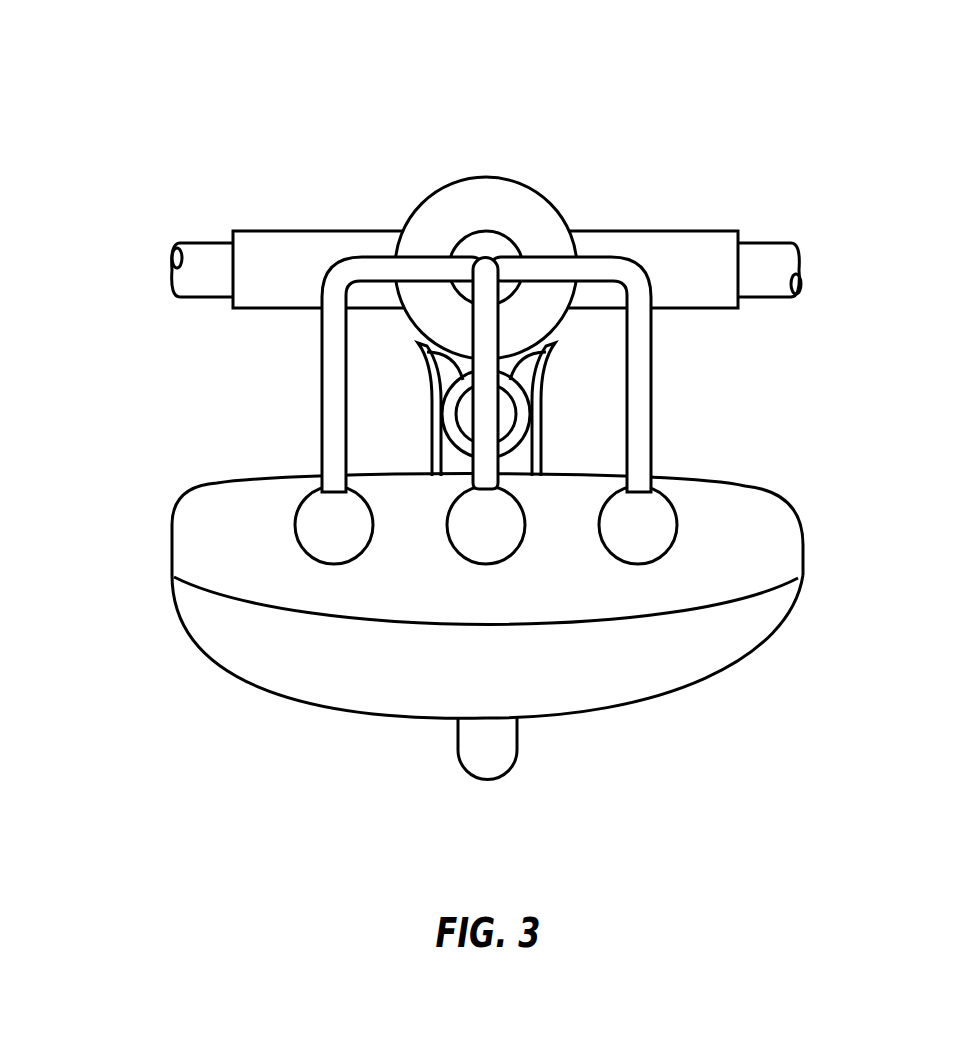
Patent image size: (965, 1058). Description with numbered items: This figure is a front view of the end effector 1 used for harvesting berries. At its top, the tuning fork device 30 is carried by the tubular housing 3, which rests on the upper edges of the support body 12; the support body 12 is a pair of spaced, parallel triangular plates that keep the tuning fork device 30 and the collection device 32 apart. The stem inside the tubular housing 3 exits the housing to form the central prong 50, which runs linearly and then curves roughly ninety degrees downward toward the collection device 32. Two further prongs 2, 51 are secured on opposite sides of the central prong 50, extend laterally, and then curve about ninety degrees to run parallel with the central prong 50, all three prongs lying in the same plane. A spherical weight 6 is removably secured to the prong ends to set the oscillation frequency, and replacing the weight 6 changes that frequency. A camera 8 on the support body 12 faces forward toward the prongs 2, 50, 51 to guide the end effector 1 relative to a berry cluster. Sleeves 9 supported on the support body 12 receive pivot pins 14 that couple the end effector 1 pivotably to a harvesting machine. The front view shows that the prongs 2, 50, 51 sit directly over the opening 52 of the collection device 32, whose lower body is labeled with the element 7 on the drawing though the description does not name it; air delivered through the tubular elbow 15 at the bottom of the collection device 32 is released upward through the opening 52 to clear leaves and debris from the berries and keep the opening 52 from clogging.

The end effector 1 is at (808, 116).
The prong 2 is at (321, 397).
The tubular housing 3 is at (560, 208).
The weight 6 is at (465, 535).
The body 7 is at (728, 638).
The camera 8 is at (526, 388).
The sleeve 9 is at (287, 243).
The support body 12 is at (429, 432).
The pivot pin 14 is at (194, 240).
The tubular elbow 15 is at (468, 759).
The tuning fork device 30 is at (833, 270).
The collection device 32 is at (824, 542).
The central prong 50 is at (482, 411).
The prong 51 is at (653, 390).
The opening 52 is at (557, 609).